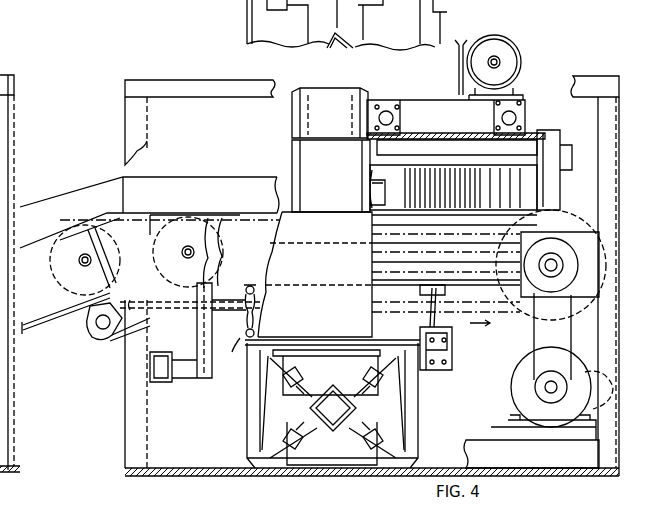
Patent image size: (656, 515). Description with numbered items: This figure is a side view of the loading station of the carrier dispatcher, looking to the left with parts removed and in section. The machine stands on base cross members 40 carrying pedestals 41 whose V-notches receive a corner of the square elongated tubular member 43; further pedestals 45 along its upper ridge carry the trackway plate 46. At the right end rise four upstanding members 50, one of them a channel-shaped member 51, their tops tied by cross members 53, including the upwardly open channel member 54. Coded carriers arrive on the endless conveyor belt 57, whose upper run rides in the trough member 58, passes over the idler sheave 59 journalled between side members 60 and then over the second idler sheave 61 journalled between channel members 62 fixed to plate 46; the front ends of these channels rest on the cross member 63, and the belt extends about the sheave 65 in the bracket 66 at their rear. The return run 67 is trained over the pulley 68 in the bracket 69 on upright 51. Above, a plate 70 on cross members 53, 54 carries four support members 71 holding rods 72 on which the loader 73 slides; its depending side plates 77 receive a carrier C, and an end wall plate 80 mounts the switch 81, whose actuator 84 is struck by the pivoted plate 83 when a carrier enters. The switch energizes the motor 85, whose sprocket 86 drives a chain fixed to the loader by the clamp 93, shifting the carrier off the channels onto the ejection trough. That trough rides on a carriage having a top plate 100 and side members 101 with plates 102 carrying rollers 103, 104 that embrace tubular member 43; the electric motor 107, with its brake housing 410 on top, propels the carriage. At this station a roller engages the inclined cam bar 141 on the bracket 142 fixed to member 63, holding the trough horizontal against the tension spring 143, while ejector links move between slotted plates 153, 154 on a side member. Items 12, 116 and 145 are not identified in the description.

The conveyor 12 is at (335, 10).
The cross members 40 is at (162, 470).
The pedestals 41 is at (332, 443).
The elongated tubular member 43 is at (347, 229).
The pedestals 45 is at (277, 35).
The plate 46 is at (325, 327).
The upstanding members 50 is at (129, 120).
The channel-shaped upstanding member 51 is at (136, 416).
The cross members 53 is at (223, 81).
The channel-formed cross member 54 is at (10, 262).
The endless conveyor belt 57 is at (558, 210).
The trough member 58 is at (36, 204).
The idler sheave 59 is at (112, 252).
The side members 60 is at (66, 313).
The second idler sheave 61 is at (199, 214).
The channel members 62 is at (142, 333).
The cross member 63 is at (154, 368).
The sheave 65 is at (612, 224).
The bracket 66 is at (584, 273).
The return run 67 is at (174, 306).
The pulley 68 is at (88, 330).
The bracket 69 is at (114, 340).
The plate 70 is at (408, 98).
The support members 71 is at (372, 113).
The rods 72 is at (387, 112).
The loader 73 is at (430, 130).
The side plates 77 is at (362, 161).
The end wall plate 80 is at (553, 132).
The switch 81 is at (572, 160).
The plate 83 is at (537, 146).
The actuator 84 is at (572, 170).
The motor 85 is at (500, 52).
The sprocket 86 is at (456, 61).
The clamp 93 is at (457, 147).
The top plate 100 is at (392, 350).
The side members 101 is at (246, 358).
The plates 102 is at (252, 404).
The rollers 103 is at (286, 406).
The rollers 104 is at (366, 396).
The electric motor 107 is at (342, 192).
The motor 116 is at (453, 238).
The inclined cam bar 141 is at (246, 318).
The bracket 142 is at (184, 372).
The tension spring 143 is at (236, 341).
The member 145 is at (202, 7).
The plate 153 is at (458, 6).
The plate 154 is at (444, 342).
The housing 410 is at (305, 115).
The carrier C is at (370, 215).